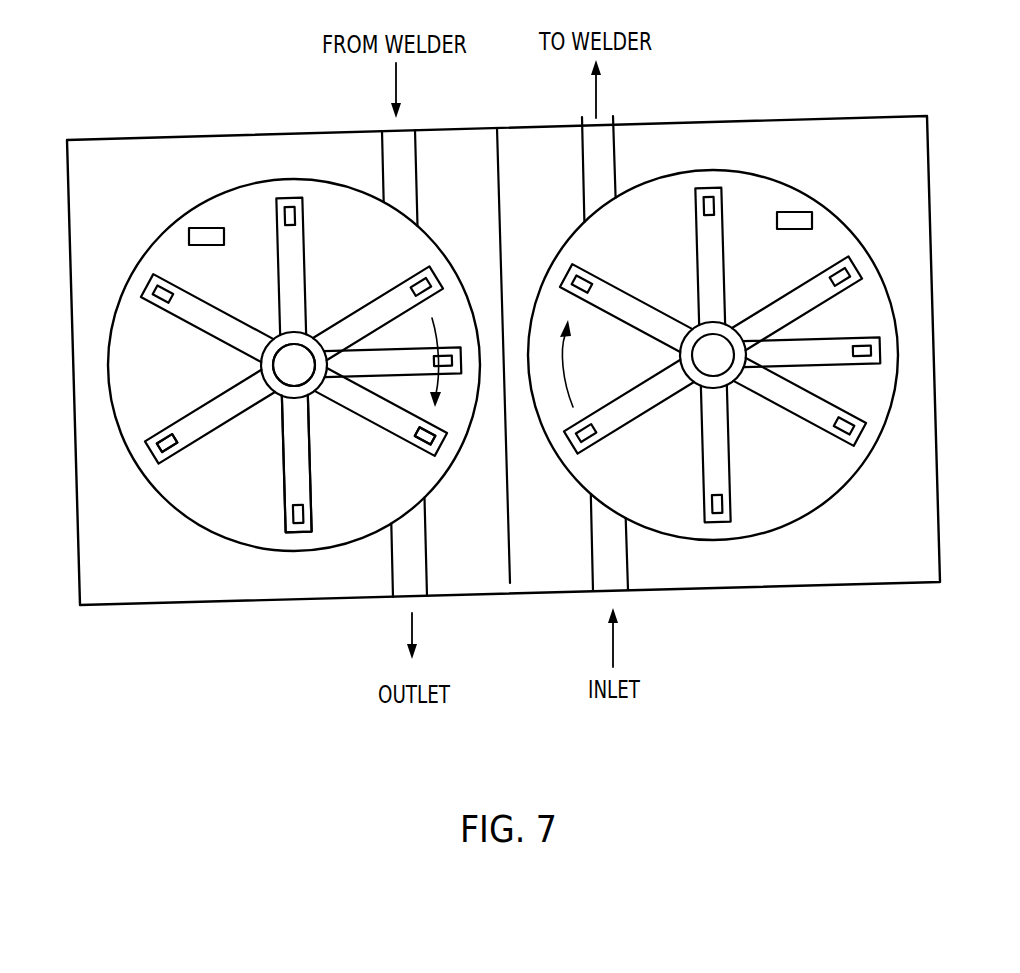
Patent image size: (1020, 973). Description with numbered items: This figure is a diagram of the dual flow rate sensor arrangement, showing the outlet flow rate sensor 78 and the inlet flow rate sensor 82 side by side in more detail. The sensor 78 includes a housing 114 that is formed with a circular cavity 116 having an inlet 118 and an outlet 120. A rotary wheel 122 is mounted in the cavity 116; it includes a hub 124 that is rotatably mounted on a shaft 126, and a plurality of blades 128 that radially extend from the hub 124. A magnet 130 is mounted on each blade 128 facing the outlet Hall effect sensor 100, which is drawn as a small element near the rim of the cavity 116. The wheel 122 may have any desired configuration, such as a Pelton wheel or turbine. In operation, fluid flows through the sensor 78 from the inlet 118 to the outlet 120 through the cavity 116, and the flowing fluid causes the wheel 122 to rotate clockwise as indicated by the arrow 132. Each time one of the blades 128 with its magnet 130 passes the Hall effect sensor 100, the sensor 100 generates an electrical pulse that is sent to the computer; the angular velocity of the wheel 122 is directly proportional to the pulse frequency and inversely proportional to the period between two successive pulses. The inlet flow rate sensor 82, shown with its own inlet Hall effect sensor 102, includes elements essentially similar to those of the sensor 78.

The outlet flow rate sensor 78 is at (160, 99).
The inlet flow rate sensor 82 is at (813, 99).
The outlet Hall effect sensor 100 is at (203, 228).
The inlet Hall effect sensor 102 is at (798, 215).
The housing 114 is at (118, 610).
The circular cavity 116 is at (131, 355).
The inlet 118 is at (402, 154).
The outlet 120 is at (398, 562).
The rotary wheel 122 is at (235, 474).
The hub 124 is at (296, 400).
The shaft 126 is at (283, 358).
The blades 128 is at (403, 428).
The magnet 130 is at (156, 456).
The arrow 132 is at (440, 362).